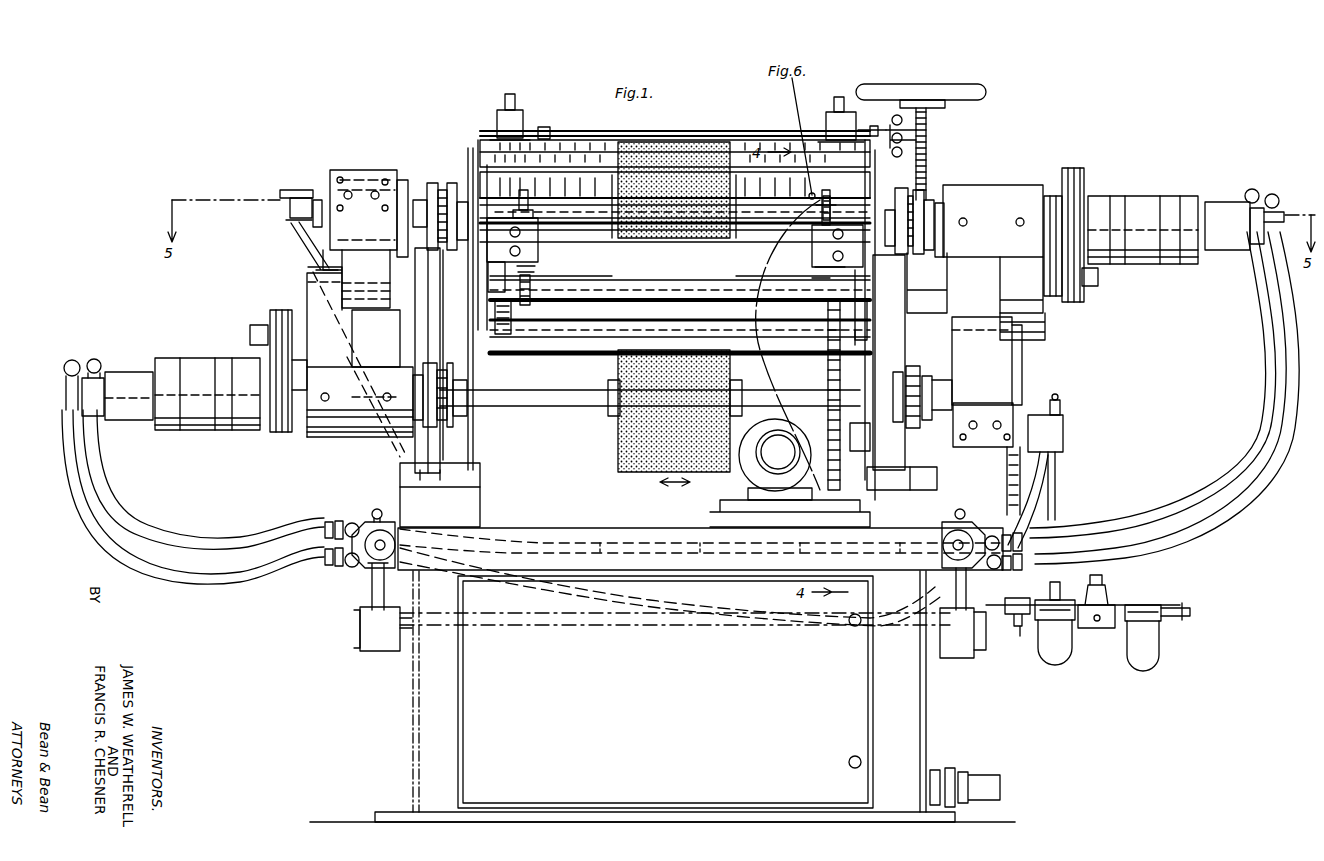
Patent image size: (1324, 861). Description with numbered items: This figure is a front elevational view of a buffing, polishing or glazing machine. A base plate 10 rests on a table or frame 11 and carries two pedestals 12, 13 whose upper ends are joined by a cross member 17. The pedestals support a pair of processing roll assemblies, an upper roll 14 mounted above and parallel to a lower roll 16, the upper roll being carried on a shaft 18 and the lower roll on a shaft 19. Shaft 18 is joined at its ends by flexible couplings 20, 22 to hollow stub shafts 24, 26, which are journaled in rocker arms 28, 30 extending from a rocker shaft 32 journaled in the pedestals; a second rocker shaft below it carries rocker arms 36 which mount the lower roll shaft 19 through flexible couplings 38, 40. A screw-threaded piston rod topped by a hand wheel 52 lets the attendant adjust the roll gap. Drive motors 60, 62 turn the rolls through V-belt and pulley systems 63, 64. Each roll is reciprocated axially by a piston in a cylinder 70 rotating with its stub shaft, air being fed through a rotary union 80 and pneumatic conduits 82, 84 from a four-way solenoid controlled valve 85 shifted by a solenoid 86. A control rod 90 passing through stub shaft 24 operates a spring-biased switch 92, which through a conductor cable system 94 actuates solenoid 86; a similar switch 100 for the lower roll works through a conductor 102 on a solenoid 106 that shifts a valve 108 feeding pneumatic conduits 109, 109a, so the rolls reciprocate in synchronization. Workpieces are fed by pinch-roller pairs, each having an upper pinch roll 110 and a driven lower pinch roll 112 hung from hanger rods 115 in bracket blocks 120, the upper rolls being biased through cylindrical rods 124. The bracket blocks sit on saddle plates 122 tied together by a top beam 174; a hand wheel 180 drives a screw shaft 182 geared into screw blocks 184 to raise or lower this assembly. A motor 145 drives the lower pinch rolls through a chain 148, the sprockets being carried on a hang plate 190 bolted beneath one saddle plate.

The base plate 10 is at (664, 516).
The table or frame 11 is at (398, 674).
The pedestal 12 is at (478, 474).
The pedestal 13 is at (938, 478).
The processing roll 14 is at (710, 142).
The processing roll 16 is at (622, 472).
The cross member 17 is at (606, 140).
The roll shaft 18 is at (584, 224).
The lower roll shaft 19 is at (566, 408).
The flexible coupling 20 is at (450, 180).
The flexible coupling 22 is at (914, 180).
The hollow stub shaft 24 is at (408, 178).
The hollow stub shaft 26 is at (1055, 198).
The rocker arm 28 is at (360, 239).
The rocker arm 30 is at (975, 249).
The rocker shaft 32 is at (748, 232).
The rocker arm 36 is at (664, 378).
The flexible coupling 38 is at (449, 354).
The flexible coupling 40 is at (872, 446).
The hand wheel 52 is at (876, 90).
The drive motor 60 is at (1046, 326).
The drive motor 62 is at (312, 296).
The V-belt and pulley system 63 is at (1080, 180).
The V-belt and pulley system 64 is at (268, 350).
The cylinder 70 is at (226, 442).
The rotary union 80 is at (120, 360).
The pneumatic conduit 82 is at (1263, 320).
The pneumatic conduit 84 is at (1218, 504).
The solenoid controlled valve 85 is at (978, 564).
The solenoid 86 is at (944, 552).
The control rod 90 is at (317, 198).
The electrical spring-biased switch 92 is at (290, 210).
The conductor cable system 94 is at (300, 236).
The solenoid control switch 100 is at (1060, 406).
The conductor 102 is at (1040, 478).
The solenoid 106 is at (372, 568).
The valve 108 is at (352, 545).
The pneumatic conduit 109 is at (238, 538).
The pneumatic conduit 109a is at (226, 576).
The upper pinch roll 110 is at (578, 286).
The lower pinch roll 112 is at (600, 342).
The hanger rod 115 is at (500, 336).
The bracket block 120 is at (538, 240).
The saddle plate 122 is at (484, 268).
The cylindrical rod 124 is at (827, 196).
The motor 145 is at (748, 478).
The chain 148 is at (826, 386).
The top beam 174 is at (556, 138).
The hand wheel 180 is at (927, 138).
The screw shaft 182 is at (576, 130).
The screw block 184 is at (498, 120).
The hang plate 190 is at (862, 350).